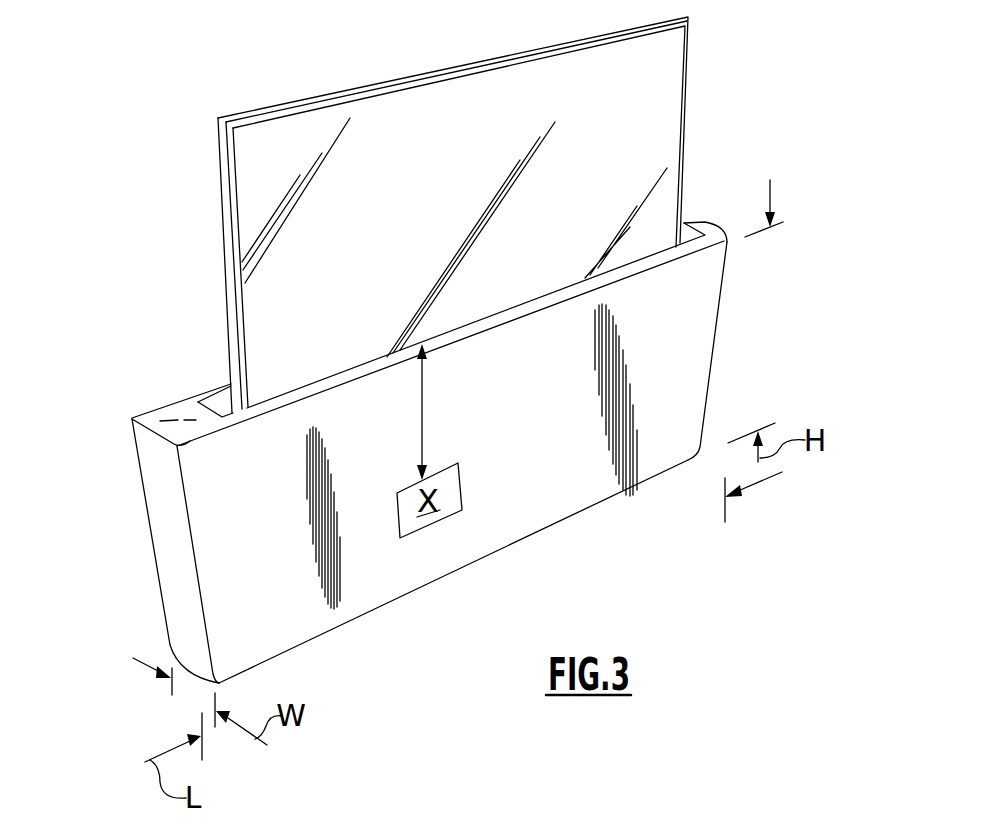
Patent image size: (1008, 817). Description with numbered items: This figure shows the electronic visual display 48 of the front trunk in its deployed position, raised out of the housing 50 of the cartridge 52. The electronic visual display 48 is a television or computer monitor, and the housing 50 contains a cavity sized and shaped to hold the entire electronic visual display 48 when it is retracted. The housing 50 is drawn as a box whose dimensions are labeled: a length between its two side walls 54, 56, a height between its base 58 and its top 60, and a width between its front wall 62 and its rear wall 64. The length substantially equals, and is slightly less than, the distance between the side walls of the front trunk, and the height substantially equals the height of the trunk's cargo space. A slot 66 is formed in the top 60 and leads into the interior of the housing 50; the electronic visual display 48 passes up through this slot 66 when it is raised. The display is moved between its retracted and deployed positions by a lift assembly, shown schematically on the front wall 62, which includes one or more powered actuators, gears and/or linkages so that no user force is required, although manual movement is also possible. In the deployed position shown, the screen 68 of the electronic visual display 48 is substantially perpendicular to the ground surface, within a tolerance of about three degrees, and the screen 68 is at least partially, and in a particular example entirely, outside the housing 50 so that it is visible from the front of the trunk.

The electronic visual display 48 is at (496, 215).
The screen 68 is at (650, 147).
The cartridge 52 is at (818, 218).
The housing 50 is at (433, 452).
The side wall 56 is at (714, 343).
The top 60 is at (176, 410).
The slot 66 is at (222, 402).
The rear wall 64 is at (133, 478).
The side wall 54 is at (165, 540).
The front wall 62 is at (507, 487).
The base 58 is at (403, 595).